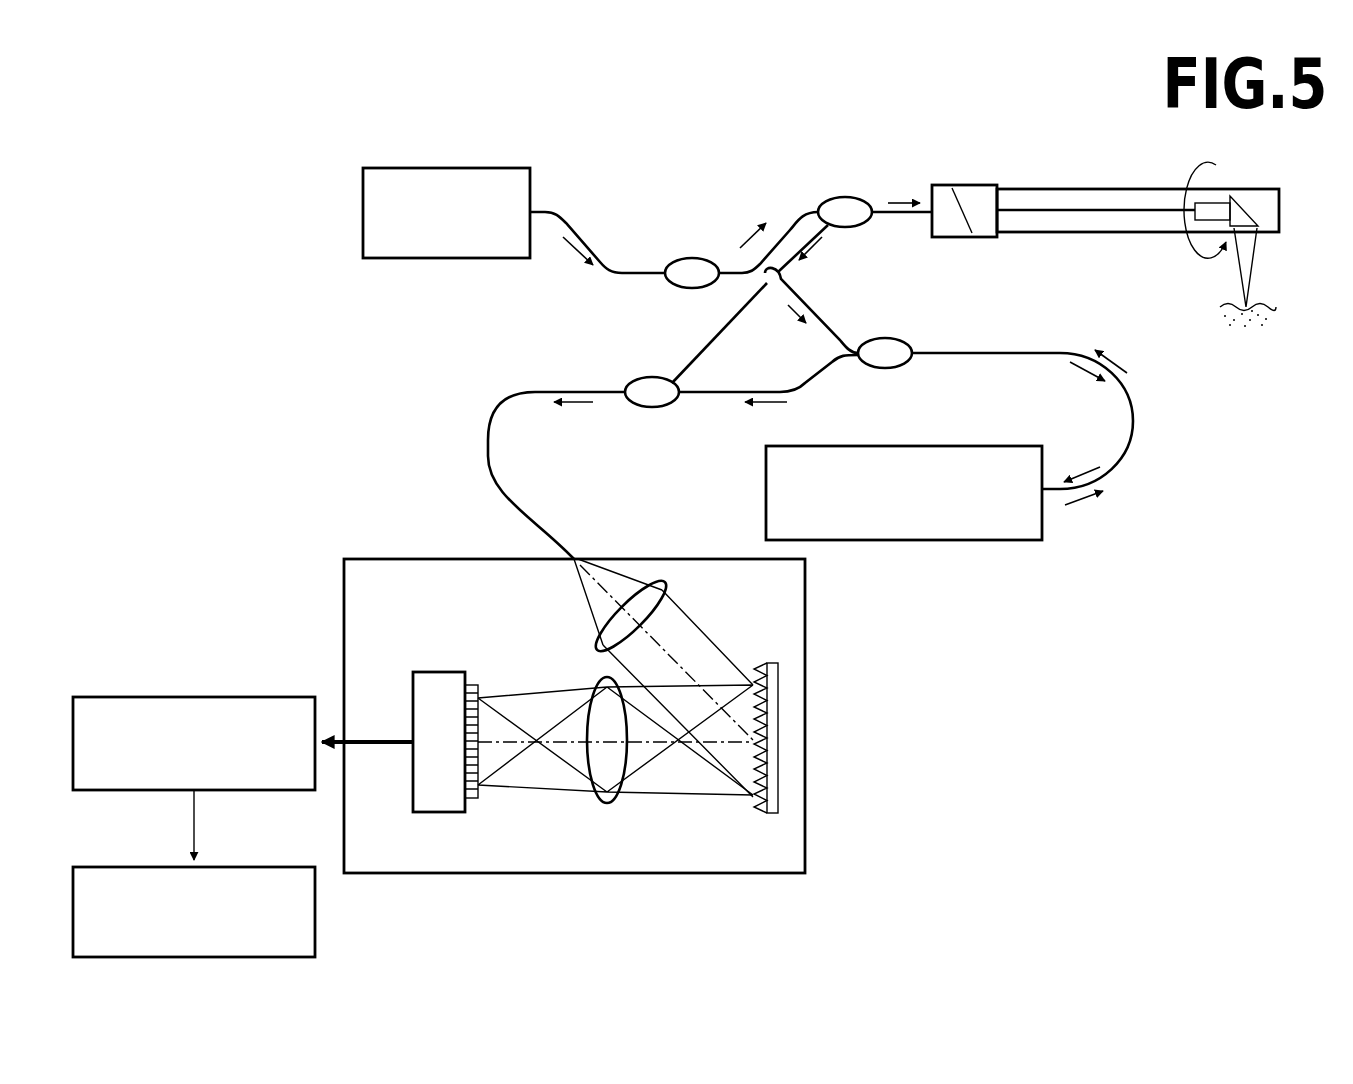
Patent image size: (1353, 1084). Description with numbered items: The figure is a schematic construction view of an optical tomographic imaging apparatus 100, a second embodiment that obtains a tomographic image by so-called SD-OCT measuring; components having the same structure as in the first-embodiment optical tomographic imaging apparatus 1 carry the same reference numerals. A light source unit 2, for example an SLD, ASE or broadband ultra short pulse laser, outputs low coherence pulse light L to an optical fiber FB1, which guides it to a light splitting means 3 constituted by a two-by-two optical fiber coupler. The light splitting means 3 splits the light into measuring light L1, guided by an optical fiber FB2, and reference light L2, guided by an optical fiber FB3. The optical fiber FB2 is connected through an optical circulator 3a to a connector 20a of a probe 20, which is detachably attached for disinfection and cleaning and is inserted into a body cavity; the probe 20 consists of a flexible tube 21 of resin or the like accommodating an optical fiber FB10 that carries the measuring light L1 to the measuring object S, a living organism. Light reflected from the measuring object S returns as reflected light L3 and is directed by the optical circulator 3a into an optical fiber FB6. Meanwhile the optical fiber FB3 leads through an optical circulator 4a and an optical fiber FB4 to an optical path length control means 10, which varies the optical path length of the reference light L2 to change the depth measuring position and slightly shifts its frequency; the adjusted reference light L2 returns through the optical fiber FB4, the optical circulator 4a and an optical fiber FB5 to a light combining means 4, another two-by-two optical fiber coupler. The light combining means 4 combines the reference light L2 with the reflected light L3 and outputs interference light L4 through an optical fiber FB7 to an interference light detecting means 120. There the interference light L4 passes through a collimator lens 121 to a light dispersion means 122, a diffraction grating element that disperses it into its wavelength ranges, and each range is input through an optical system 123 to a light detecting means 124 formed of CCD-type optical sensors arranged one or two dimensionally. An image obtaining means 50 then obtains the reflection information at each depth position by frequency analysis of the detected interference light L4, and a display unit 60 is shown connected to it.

The optical tomographic imaging apparatus 100 is at (675, 121).
The optical tomographic imaging apparatus 1 is at (735, 178).
The light source unit 2 is at (518, 168).
The light splitting means 3 is at (690, 258).
The optical circulator 3a is at (845, 197).
The light combining means 4 is at (652, 408).
The optical circulator 4a is at (895, 340).
The optical path length control means 10 is at (1022, 540).
The probe 20 is at (1070, 187).
The connector 20a is at (950, 197).
The flexible tube 21 is at (1148, 192).
The image obtaining means 50 is at (95, 697).
The display unit 60 is at (95, 867).
The interference light detecting means 120 is at (805, 588).
The collimator lens 121 is at (668, 585).
The light dispersion means 122 is at (772, 662).
The optical system 123 is at (605, 808).
The light detecting means 124 is at (440, 672).
The optical fiber FB1 is at (584, 241).
The optical fiber FB2 is at (793, 214).
The optical fiber FB3 is at (826, 332).
The optical fiber FB4 is at (1135, 418).
The optical fiber FB5 is at (808, 376).
The optical fiber FB6 is at (696, 365).
The optical fiber FB7 is at (493, 424).
The optical fiber FB10 is at (1030, 209).
The low coherence pulse light L is at (576, 256).
The measuring light L1 is at (820, 210).
The reference light L2 is at (943, 418).
The reflected light L3 is at (814, 250).
The interference light L4 is at (573, 416).
The measuring object S is at (1262, 306).